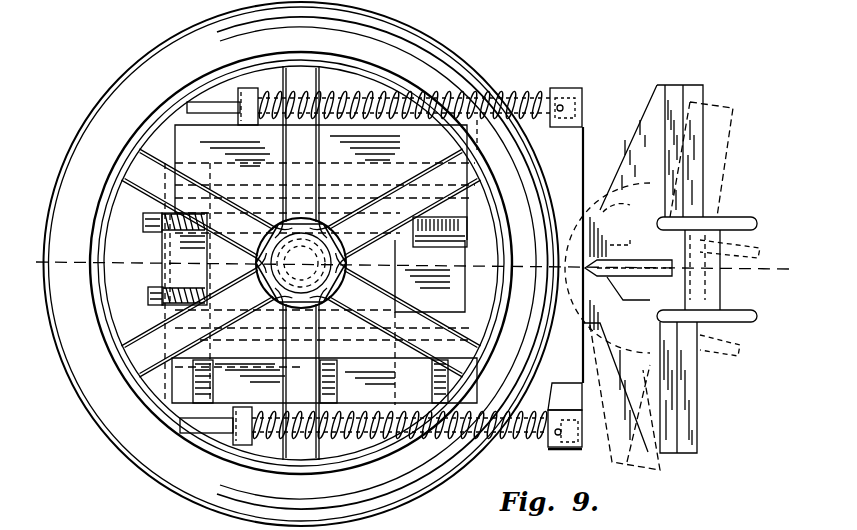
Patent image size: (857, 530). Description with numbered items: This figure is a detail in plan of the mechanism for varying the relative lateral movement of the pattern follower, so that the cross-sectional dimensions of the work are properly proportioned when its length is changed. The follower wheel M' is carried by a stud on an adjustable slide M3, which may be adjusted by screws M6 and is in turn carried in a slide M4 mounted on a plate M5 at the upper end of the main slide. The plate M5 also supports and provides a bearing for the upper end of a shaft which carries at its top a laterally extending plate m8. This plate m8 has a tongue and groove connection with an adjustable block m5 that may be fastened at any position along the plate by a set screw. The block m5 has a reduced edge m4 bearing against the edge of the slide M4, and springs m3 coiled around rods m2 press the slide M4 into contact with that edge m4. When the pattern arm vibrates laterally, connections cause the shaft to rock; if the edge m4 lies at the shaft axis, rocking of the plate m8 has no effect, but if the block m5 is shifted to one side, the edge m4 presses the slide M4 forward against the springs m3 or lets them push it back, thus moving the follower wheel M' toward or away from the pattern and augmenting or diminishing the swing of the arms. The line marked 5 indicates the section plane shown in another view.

The follower wheel M' is at (301, 264).
The adjustable slide M3 is at (387, 282).
The plate M5 is at (190, 142).
The screws M6 is at (165, 222).
The slide M4 is at (130, 266).
The rods m2 is at (207, 104).
The springs m3 is at (380, 93).
The reduced edge m4 is at (612, 255).
The adjustable block m5 is at (720, 296).
The plate m8 is at (690, 428).
The section line 5- 5 is at (411, 269).